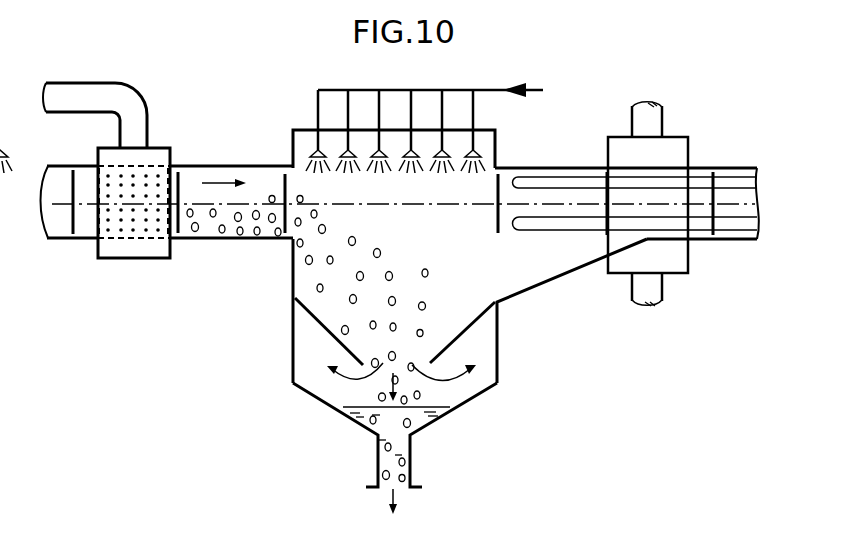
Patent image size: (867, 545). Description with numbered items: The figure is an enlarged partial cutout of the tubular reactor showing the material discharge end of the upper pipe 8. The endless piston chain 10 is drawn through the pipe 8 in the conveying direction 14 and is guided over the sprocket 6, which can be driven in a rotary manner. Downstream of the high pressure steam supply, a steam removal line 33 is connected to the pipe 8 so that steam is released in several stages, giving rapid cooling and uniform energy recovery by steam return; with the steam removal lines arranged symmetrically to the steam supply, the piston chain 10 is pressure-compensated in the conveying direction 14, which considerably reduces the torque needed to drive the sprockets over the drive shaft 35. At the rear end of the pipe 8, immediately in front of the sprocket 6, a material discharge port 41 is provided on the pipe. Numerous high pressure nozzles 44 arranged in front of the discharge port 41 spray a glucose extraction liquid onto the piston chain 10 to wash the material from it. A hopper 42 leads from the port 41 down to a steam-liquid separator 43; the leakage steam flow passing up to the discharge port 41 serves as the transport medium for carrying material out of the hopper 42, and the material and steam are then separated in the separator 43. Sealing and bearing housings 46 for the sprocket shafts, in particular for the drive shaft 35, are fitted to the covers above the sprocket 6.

The upper pipe 8 is at (62, 240).
The steam removal line 33 is at (137, 93).
The conveying direction 14 is at (221, 176).
The material discharge port 41 is at (320, 272).
The hopper 42 is at (318, 323).
The steam-liquid separator 43 is at (315, 358).
The high pressure nozzles 44 is at (448, 153).
The piston chain 10 is at (577, 198).
The sprocket 6 is at (557, 183).
The sealing and bearing housings 46 is at (677, 150).
The drive shaft 35 is at (653, 122).